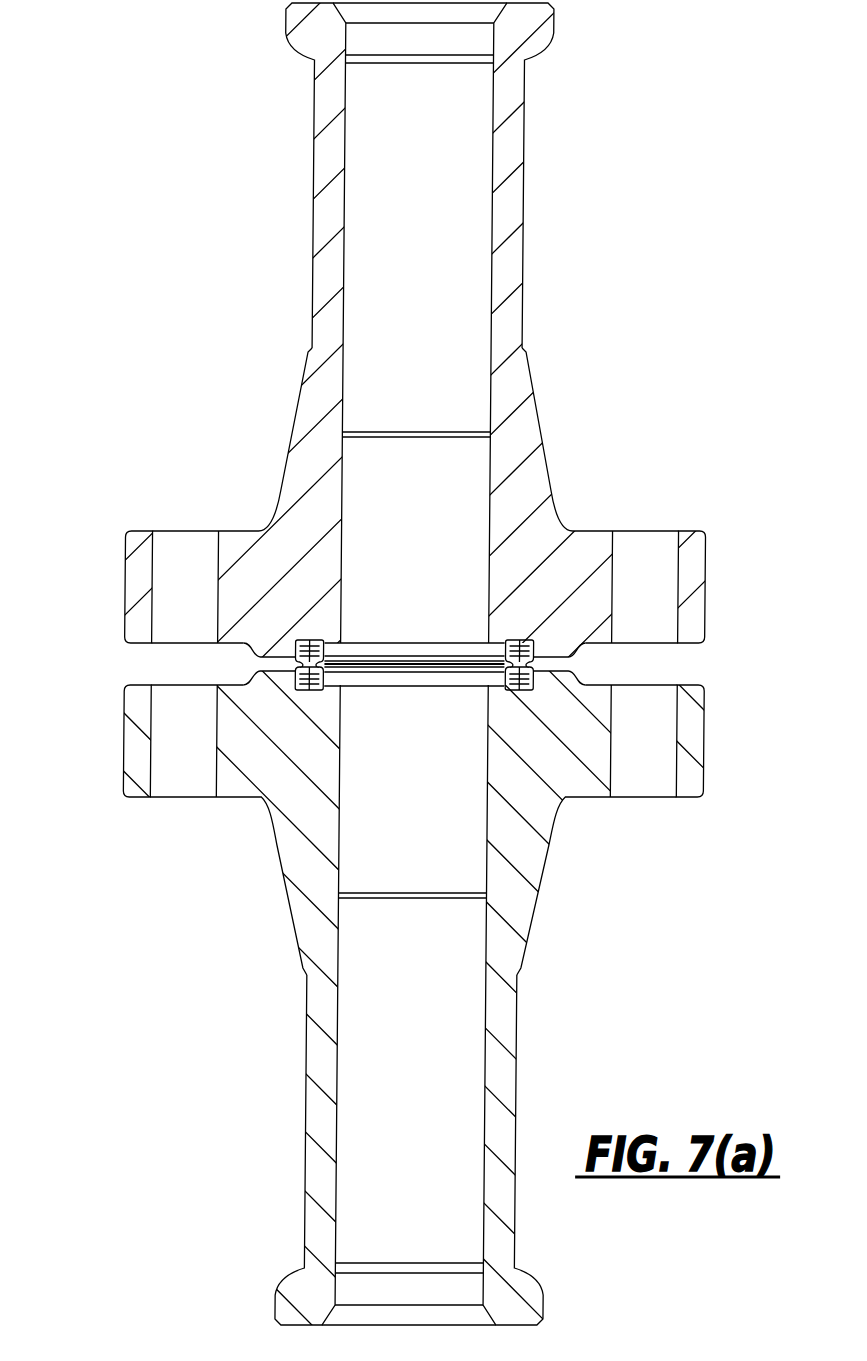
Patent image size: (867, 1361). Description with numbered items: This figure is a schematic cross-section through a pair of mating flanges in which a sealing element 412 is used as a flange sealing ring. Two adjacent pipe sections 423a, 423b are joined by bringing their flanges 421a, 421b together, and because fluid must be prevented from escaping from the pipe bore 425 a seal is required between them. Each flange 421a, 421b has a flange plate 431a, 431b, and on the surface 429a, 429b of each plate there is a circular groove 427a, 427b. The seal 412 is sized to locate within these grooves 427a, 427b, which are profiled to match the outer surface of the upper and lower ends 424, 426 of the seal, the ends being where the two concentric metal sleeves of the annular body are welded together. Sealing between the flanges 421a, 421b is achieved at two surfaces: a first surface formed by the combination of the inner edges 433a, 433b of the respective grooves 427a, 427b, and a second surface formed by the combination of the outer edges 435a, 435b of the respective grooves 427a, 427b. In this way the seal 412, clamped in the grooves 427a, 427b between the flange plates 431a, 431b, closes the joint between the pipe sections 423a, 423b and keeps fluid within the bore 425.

The sealing element 412 is at (556, 664).
The flange 421a is at (550, 458).
The flange 421b is at (556, 855).
The pipe section 423a is at (527, 240).
The pipe section 423b is at (525, 1065).
The upper end 424 is at (323, 640).
The pipe bore 425 is at (414, 665).
The lower end 426 is at (323, 690).
The circular groove 427a is at (310, 637).
The circular groove 427b is at (310, 690).
The surface 429a is at (695, 645).
The surface 429b is at (255, 658).
The flange plate 431a is at (130, 596).
The flange plate 431b is at (130, 738).
The inner edge 433a is at (492, 655).
The inner edge 433b is at (492, 682).
The outer edge 435a is at (547, 640).
The outer edge 435b is at (547, 690).